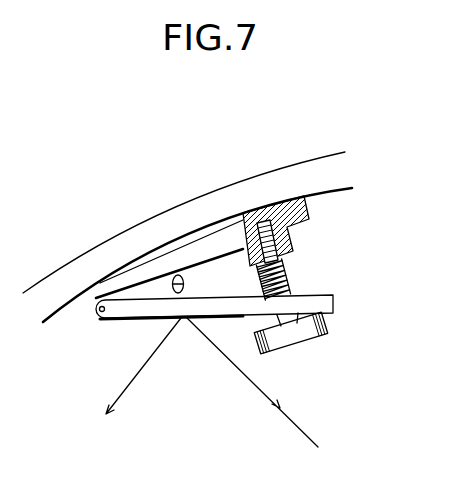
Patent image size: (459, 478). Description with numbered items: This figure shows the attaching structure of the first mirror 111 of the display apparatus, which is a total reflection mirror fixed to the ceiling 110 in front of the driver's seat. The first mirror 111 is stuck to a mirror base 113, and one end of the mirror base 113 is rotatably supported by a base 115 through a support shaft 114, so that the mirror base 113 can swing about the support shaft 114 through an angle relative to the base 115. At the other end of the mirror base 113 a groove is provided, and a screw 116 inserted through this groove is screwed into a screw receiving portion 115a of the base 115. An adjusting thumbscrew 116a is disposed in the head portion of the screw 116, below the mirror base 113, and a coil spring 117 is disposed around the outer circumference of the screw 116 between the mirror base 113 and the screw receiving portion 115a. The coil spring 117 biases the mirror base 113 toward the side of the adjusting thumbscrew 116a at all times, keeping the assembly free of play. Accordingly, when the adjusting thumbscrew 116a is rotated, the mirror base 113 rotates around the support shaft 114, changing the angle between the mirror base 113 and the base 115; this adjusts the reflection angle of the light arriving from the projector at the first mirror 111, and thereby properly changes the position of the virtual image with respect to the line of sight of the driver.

The ceiling 110 is at (110, 245).
The first mirror 111 is at (132, 320).
The mirror base 113 is at (334, 302).
The support shaft 114 is at (94, 307).
The base 115 is at (210, 242).
The screw receiving portion 115a is at (290, 231).
The screw 116 is at (268, 210).
The adjusting thumbscrew 116a is at (330, 320).
The coil spring 117 is at (284, 284).